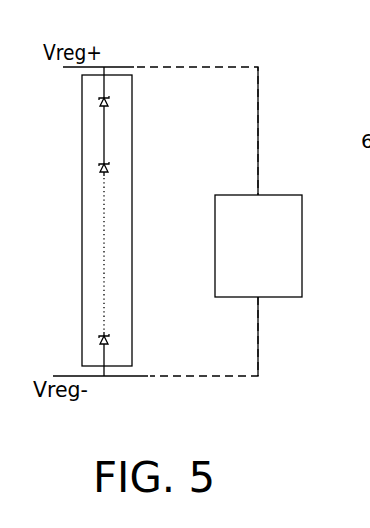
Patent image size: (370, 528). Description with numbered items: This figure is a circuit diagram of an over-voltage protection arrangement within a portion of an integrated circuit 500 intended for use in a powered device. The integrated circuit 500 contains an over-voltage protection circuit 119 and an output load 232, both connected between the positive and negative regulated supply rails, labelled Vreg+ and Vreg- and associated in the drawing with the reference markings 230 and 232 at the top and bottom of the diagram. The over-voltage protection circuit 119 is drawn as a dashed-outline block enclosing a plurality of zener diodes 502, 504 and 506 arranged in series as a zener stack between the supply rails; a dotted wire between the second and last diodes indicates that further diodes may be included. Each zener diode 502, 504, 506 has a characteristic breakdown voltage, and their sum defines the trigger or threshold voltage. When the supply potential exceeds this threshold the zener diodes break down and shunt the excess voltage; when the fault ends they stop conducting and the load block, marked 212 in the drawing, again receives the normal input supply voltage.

The integrated circuit 500 is at (270, 101).
The positive regulated voltage rail Vreg+ 230 is at (120, 67).
The output load 232 is at (140, 376).
The over-voltage protection circuit 119 is at (132, 220).
The zener diode 502 is at (100, 101).
The zener diode 504 is at (101, 167).
The zener diode 506 is at (102, 338).
The load 212 is at (302, 195).